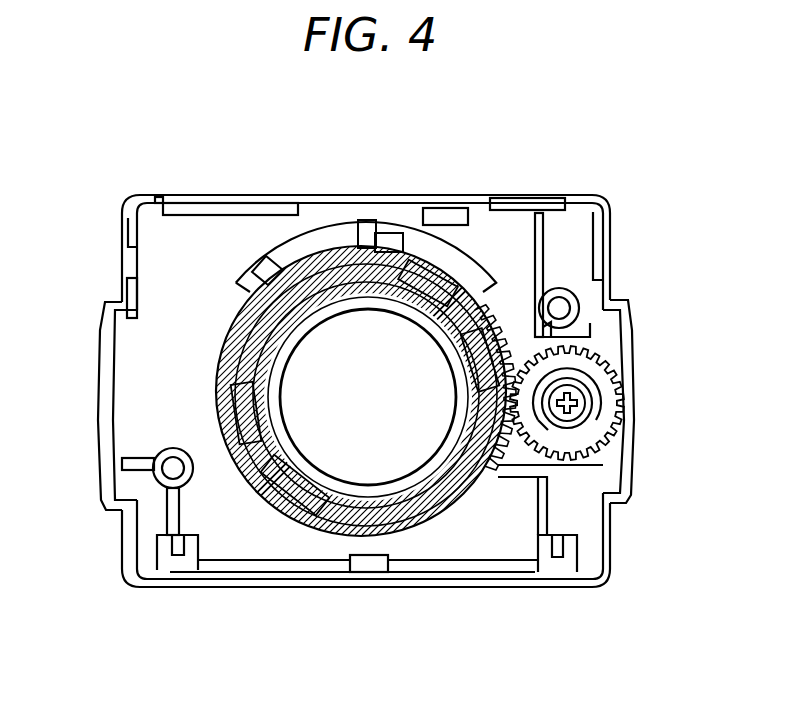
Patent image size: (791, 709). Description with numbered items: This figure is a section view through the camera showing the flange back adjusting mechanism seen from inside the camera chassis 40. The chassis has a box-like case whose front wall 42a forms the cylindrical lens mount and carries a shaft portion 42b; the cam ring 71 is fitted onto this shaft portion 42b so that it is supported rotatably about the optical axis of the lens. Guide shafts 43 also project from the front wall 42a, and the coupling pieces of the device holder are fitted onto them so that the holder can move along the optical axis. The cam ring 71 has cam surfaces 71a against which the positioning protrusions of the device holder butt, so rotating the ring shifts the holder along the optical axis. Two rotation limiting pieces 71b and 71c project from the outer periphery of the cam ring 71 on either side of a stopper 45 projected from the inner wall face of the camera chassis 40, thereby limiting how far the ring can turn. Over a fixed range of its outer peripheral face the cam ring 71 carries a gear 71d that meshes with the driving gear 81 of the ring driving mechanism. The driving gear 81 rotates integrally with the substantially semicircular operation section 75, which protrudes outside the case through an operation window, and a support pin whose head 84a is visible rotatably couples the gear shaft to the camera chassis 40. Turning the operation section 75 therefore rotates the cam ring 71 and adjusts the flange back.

The camera chassis 40 is at (86, 390).
The front wall 42a is at (183, 258).
The shaft portion 42b is at (330, 300).
The guide shaft 43 is at (561, 309).
The stopper 45 is at (365, 232).
The cam ring 71 is at (412, 502).
The cam surface 71a is at (470, 372).
The rotation limiting piece 71b is at (396, 265).
The rotation limiting piece 71c is at (277, 258).
The gear 71d is at (492, 320).
The operation section 75 is at (610, 413).
The driving gear 81 is at (590, 330).
The head 84a is at (578, 398).